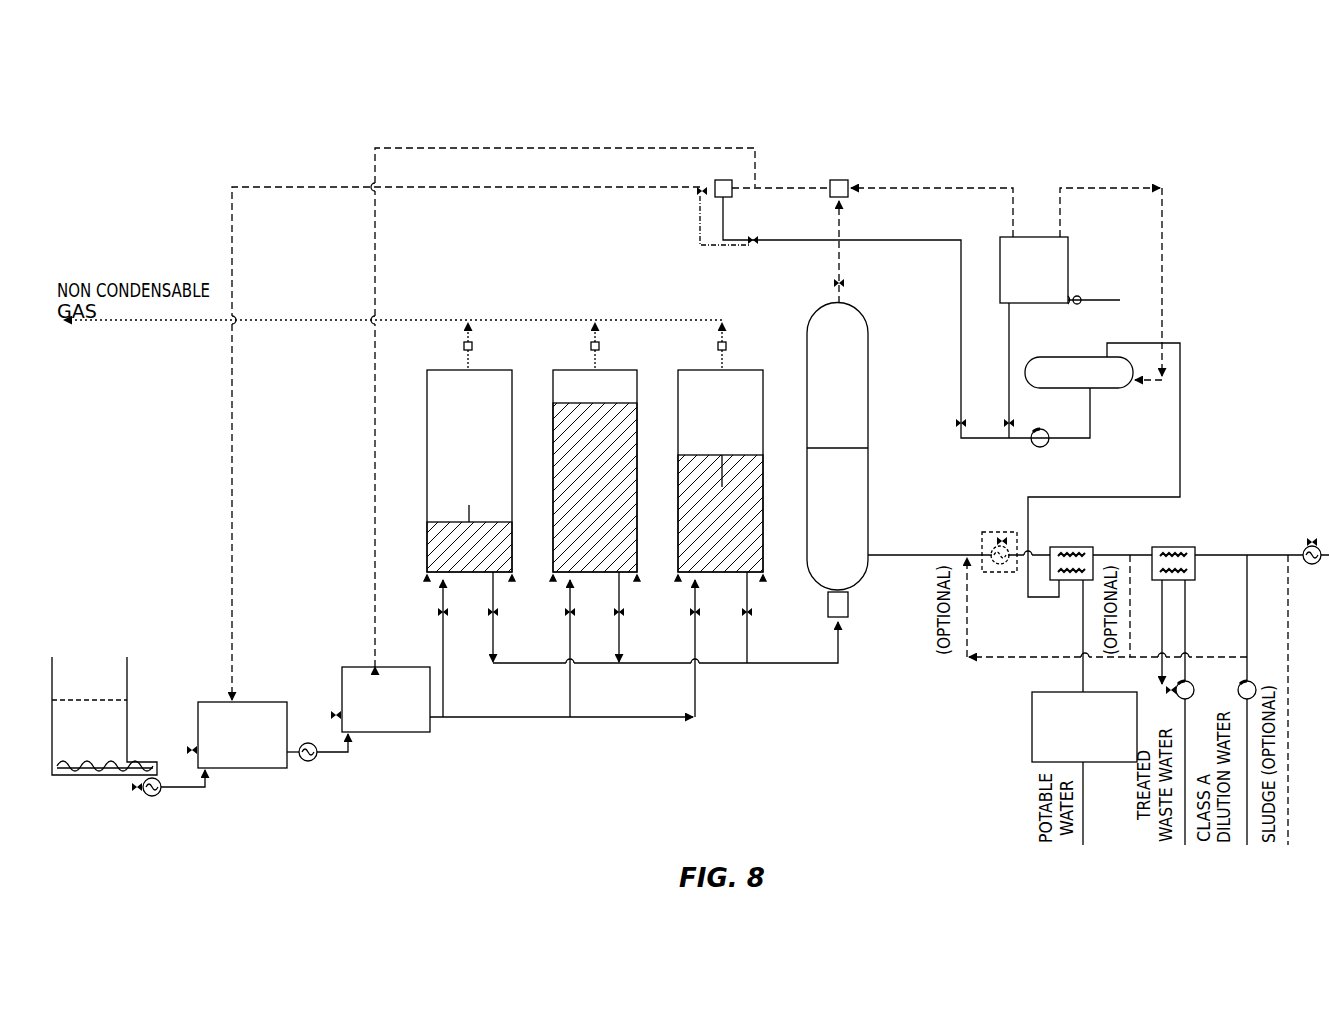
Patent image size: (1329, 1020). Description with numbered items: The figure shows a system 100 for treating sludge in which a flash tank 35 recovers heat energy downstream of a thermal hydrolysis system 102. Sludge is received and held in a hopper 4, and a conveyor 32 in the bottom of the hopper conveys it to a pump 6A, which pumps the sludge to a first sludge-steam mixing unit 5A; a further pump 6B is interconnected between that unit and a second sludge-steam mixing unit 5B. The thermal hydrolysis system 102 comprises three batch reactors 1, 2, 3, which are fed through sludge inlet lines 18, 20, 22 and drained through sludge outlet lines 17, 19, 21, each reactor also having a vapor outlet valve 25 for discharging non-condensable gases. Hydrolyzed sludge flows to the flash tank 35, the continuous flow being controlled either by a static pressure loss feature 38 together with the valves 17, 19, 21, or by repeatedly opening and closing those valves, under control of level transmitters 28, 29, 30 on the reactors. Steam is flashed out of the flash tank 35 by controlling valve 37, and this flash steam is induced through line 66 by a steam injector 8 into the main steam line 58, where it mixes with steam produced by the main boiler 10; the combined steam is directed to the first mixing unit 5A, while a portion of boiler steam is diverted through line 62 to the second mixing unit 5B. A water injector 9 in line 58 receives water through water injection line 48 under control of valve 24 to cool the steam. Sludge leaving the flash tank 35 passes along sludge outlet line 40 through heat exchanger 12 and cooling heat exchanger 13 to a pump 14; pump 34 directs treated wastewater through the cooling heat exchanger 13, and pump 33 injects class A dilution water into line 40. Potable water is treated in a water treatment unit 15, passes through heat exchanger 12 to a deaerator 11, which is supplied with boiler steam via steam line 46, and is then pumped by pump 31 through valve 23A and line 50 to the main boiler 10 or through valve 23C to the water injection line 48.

The system for treating sludge 100 is at (213, 116).
The thermal hydrolysis system 102 is at (541, 288).
The batch reactor 1 is at (720, 471).
The batch reactor 2 is at (595, 471).
The batch reactor 3 is at (469, 471).
The hopper 4 is at (104, 716).
The sludge-steam mixing unit 5A is at (237, 725).
The sludge-steam mixing unit 5B is at (380, 687).
The pump 6A is at (168, 796).
The pump 6B is at (317, 760).
The steam injector 8 is at (872, 187).
The water injector 9 is at (723, 207).
The main boiler 10 is at (1071, 270).
The deaerator 11 is at (1102, 466).
The heat exchanger 12 is at (1084, 556).
The cooling heat exchanger 13 is at (1188, 551).
The pump 14 is at (1151, 552).
The water treatment unit 15 is at (1084, 712).
The sludge outlet line valve 17 is at (735, 617).
The sludge inlet line 18 is at (683, 648).
The sludge outlet line valve 19 is at (608, 617).
The sludge inlet line 20 is at (558, 648).
The sludge outlet line valve 21 is at (482, 617).
The sludge inlet line 22 is at (430, 648).
The valve 23A is at (985, 426).
The valve 23C is at (958, 420).
The control valve 24 is at (751, 254).
The vapor outlet valve 25 is at (583, 346).
The level transmitter 28 is at (721, 588).
The level transmitter 29 is at (595, 588).
The level transmitter 30 is at (471, 588).
The pump 31 is at (1039, 427).
The conveyor 32 is at (97, 790).
The pump 33 is at (1256, 700).
The pump 34 is at (1187, 712).
The flash tank 35 is at (837, 447).
The valve 37 is at (828, 286).
The static pressure loss feature 38 is at (879, 624).
The sludge outlet line 40 is at (1234, 555).
The steam line 46 is at (1110, 188).
The water injection line 48 is at (810, 240).
The line 50 is at (1012, 336).
The main steam line 58 is at (597, 187).
The line 62 is at (657, 150).
The line 66 is at (835, 266).